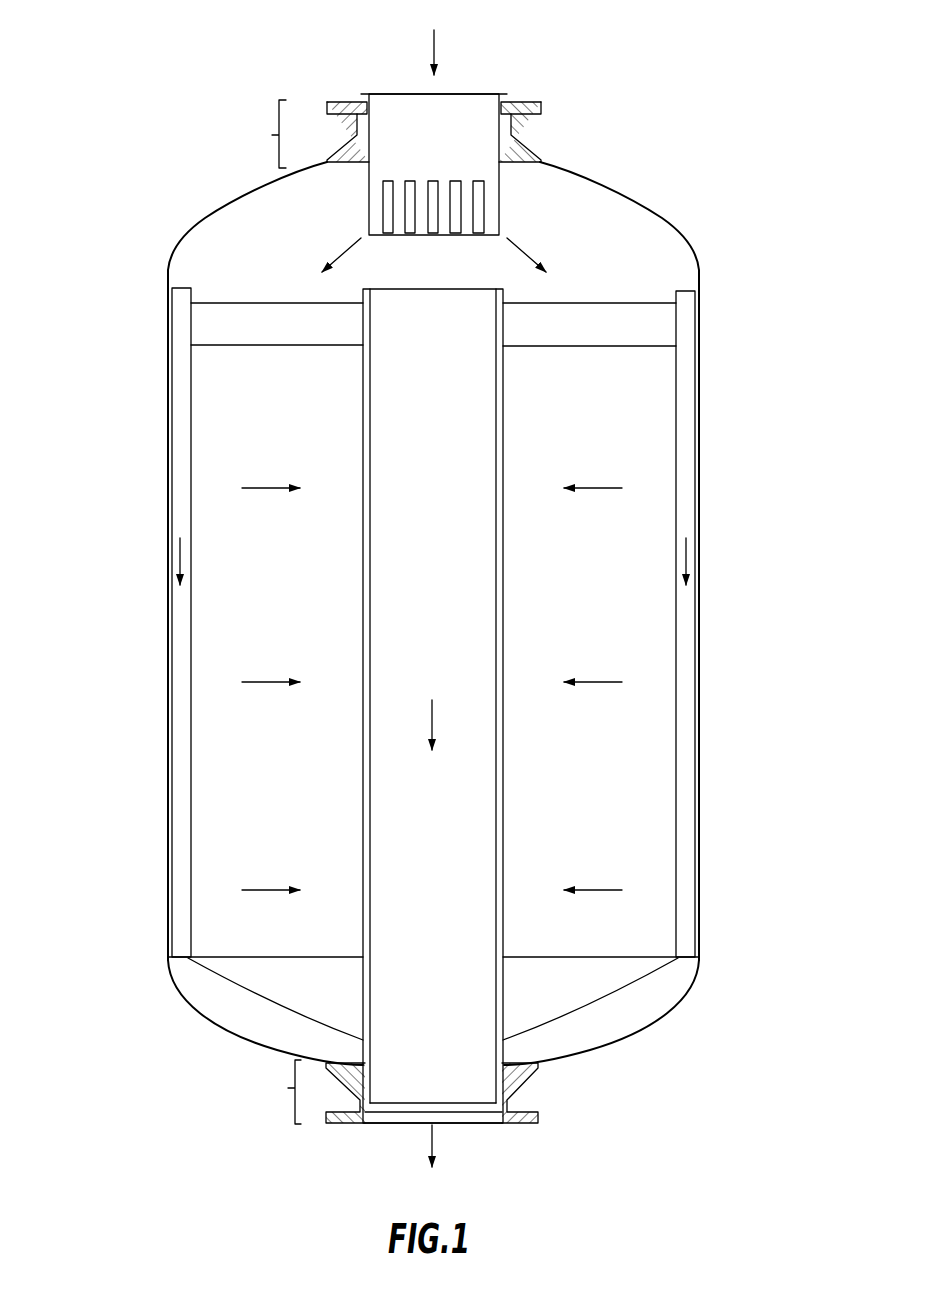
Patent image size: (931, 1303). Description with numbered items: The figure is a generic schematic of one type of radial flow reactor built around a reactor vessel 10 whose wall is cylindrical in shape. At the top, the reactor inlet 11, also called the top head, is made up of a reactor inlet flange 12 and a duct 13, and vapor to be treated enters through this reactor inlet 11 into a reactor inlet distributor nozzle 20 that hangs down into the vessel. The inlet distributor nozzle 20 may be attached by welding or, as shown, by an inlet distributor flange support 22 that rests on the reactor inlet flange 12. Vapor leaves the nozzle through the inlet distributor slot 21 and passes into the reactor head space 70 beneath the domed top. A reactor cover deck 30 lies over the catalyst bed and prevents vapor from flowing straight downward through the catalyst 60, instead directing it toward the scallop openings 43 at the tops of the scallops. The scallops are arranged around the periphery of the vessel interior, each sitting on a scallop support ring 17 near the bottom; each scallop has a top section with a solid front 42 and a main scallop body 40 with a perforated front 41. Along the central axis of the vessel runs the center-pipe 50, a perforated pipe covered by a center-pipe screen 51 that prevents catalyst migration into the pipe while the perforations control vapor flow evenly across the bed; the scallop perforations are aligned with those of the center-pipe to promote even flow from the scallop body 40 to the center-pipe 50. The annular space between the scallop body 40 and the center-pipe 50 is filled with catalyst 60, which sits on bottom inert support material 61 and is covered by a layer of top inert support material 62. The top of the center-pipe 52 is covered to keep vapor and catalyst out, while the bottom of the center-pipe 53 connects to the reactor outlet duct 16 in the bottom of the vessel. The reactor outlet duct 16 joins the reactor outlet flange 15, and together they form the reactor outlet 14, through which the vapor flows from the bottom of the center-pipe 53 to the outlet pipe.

The reactor vessel 10 is at (203, 207).
The reactor inlet 11 is at (272, 135).
The reactor inlet flange 12 is at (433, 121).
The duct 13 is at (439, 146).
The reactor outlet 14 is at (380, 1118).
The reactor outlet flange 15 is at (320, 1133).
The reactor outlet duct 16 is at (446, 1091).
The scallop support ring 17 is at (169, 966).
The reactor inlet distributor nozzle 20 is at (387, 210).
The inlet distributor slot 21 is at (387, 212).
The inlet distributor flange support 22 is at (514, 95).
The reactor cover deck 30 is at (397, 659).
The scallop body 40 is at (481, 576).
The perforated front 41 is at (688, 527).
The solid front 42 is at (680, 362).
The scallop openings 43 is at (688, 290).
The center-pipe 50 is at (433, 684).
The center-pipe screen 51 is at (372, 430).
The top of the center-pipe 52 is at (395, 290).
The bottom of the center-pipe 53 is at (370, 1058).
The catalyst 60 is at (243, 527).
The bottom inert support material 61 is at (603, 968).
The top inert support material 62 is at (213, 325).
The reactor head space 70 is at (570, 226).